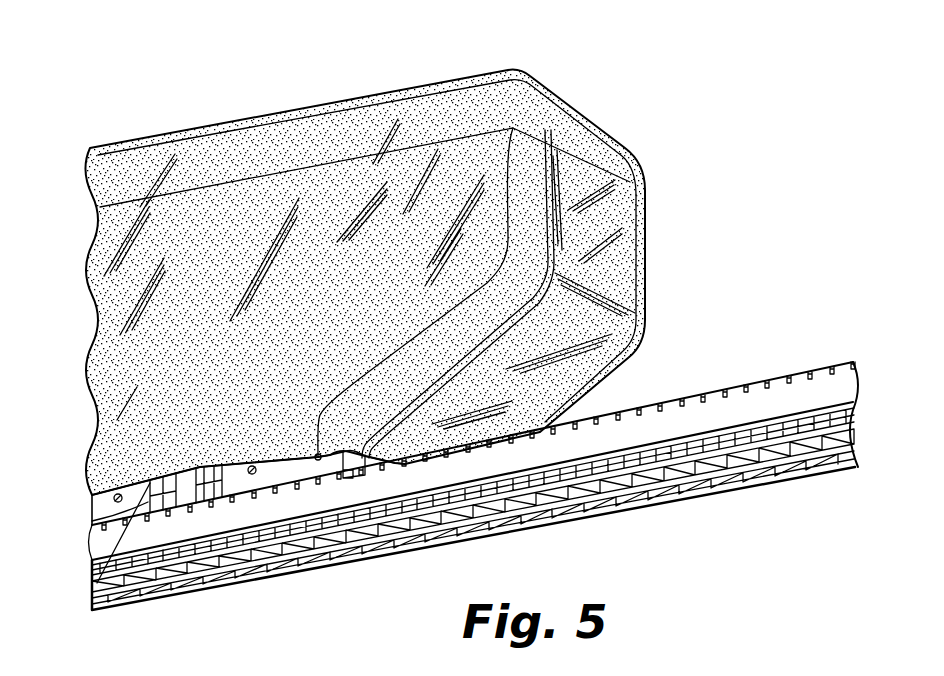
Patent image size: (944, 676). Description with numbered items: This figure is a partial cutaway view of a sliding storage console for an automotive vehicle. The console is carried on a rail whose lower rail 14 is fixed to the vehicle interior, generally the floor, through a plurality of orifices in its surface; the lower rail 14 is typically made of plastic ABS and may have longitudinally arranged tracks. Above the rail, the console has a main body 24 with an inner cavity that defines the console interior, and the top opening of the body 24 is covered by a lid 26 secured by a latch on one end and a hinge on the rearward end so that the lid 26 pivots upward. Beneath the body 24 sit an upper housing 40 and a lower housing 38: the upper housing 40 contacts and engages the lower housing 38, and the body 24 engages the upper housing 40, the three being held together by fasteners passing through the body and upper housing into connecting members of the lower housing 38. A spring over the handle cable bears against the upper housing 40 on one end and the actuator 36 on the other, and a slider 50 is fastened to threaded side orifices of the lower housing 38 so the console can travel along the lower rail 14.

The lower rail 14 is at (653, 424).
The main body 24 is at (322, 301).
The lid 26 is at (325, 100).
The actuator 36 is at (93, 593).
The lower housing 38 is at (197, 463).
The upper housing 40 is at (92, 526).
The slider 50 is at (282, 470).